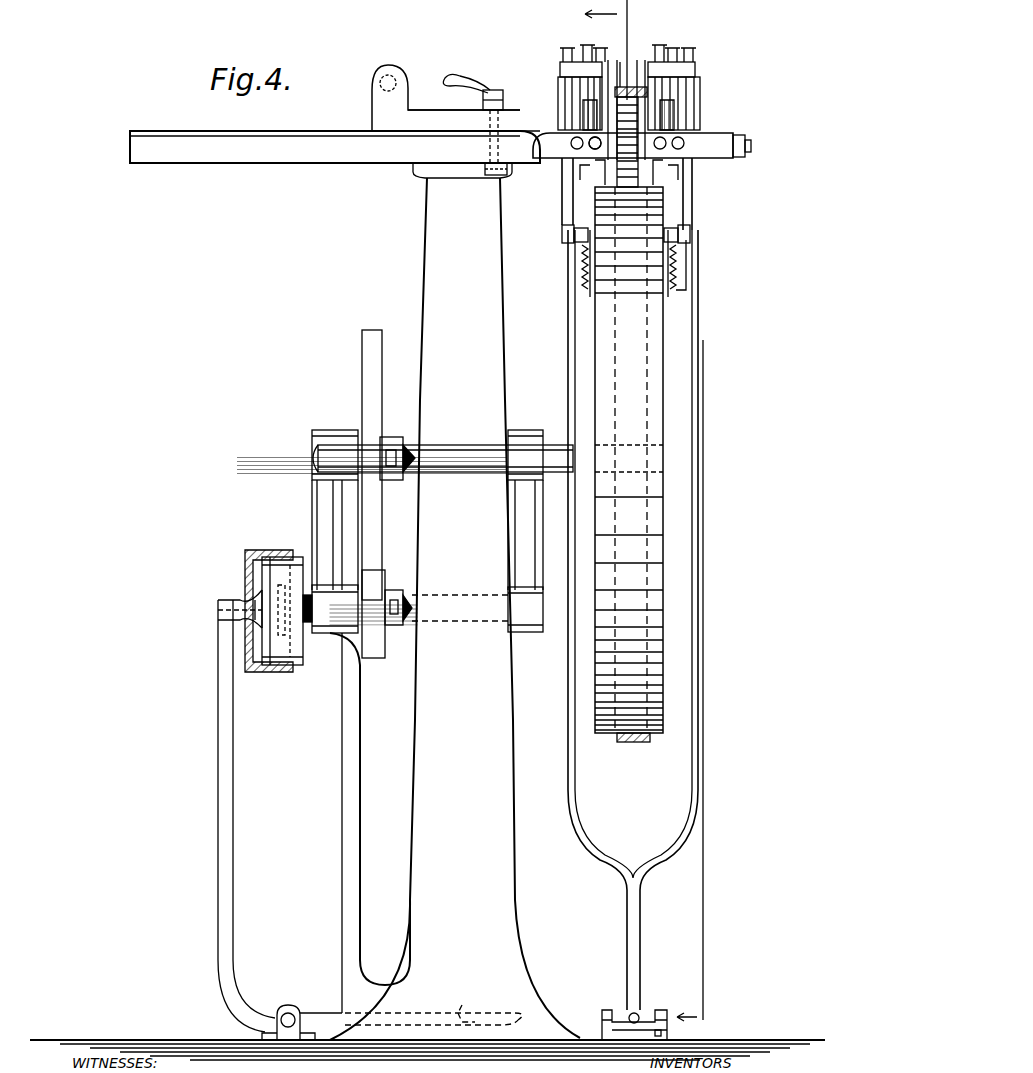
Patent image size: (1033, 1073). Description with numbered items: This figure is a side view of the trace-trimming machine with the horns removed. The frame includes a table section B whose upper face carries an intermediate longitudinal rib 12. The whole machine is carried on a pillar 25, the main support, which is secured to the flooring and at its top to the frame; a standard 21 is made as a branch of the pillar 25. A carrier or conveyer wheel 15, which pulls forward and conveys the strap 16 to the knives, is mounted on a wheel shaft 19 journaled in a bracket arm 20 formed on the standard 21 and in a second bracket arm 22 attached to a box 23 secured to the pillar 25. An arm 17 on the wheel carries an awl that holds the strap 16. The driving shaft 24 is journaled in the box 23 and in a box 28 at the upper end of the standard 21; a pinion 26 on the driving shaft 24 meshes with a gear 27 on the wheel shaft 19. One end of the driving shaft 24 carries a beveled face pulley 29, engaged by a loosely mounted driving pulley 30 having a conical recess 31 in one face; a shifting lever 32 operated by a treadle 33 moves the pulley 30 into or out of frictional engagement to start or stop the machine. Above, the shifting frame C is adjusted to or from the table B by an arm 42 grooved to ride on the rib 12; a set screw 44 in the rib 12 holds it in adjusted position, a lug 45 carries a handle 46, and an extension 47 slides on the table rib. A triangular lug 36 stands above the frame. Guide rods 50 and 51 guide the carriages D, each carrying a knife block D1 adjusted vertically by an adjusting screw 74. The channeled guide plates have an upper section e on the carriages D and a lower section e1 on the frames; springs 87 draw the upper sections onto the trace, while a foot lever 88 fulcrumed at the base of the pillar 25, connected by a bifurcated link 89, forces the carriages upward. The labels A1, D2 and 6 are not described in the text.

The intermediate longitudinal rib 12 is at (268, 131).
The table section B is at (335, 147).
The upwardly-extending lug 45 is at (372, 112).
The arm 42 is at (464, 120).
The set screw 44 is at (493, 90).
The extension 47 is at (509, 136).
The shifting or adjustable frame C is at (633, 145).
The end nut A1 is at (718, 133).
The upper section of channeled plate e is at (620, 62).
The lower section of channeled plate e1 is at (599, 149).
The carriage D is at (560, 96).
The knife block D1 is at (560, 68).
The head plate D2 is at (585, 62).
The adjusting screw 74 is at (568, 44).
The triangular lug 36 is at (583, 112).
The handle 46 is at (618, 86).
The guide rod 51 is at (586, 297).
The arm 17 is at (630, 188).
The spring 87 is at (580, 273).
The guide rod 50 is at (688, 291).
The bifurcated link 89 is at (570, 337).
The carrier or conveyer wheel 15 is at (629, 460).
The strap 16 is at (630, 743).
The gear 27 is at (386, 400).
The wheel shaft 19 is at (443, 447).
The bracket arm 20 is at (318, 515).
The second bracket arm 22 is at (538, 538).
The driving pulley 30 is at (258, 550).
The conical recess 31 is at (245, 578).
The box 28 is at (330, 609).
The driving shaft 24 is at (403, 590).
The box 23 is at (531, 634).
The beveled face pulley 29 is at (294, 672).
The pinion 26 is at (374, 660).
The pillar 25 is at (455, 601).
The standard 21 is at (342, 808).
The shifting lever 32 is at (220, 845).
The treadle 33 is at (458, 1012).
The foot lever 88 is at (648, 1012).
The cable 6 is at (645, 520).